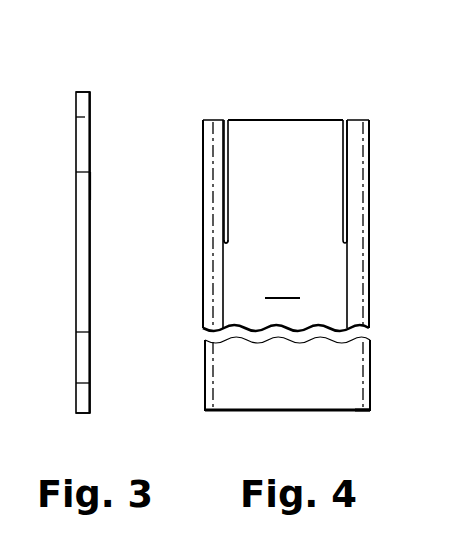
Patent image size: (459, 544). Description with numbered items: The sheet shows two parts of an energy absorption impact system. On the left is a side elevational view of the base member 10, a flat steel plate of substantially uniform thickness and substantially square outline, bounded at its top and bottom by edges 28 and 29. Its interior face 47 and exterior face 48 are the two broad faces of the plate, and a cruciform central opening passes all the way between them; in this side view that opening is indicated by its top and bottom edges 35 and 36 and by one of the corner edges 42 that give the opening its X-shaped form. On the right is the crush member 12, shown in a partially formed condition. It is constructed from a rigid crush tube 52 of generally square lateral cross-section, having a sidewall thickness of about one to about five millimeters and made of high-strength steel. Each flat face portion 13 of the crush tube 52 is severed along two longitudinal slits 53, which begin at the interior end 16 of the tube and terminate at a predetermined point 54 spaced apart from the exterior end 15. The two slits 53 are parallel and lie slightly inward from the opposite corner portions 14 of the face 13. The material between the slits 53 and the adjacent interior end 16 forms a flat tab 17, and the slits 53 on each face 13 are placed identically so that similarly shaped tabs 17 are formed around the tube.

In FIG. 3, the base member 10 is at (92, 92).
In FIG. 4, the crush member 12 is at (369, 120).
In FIG. 4, the flat face portion 13 is at (280, 286).
In FIG. 4, the corner portion 14 is at (369, 280).
In FIG. 4, the exterior end 15 is at (268, 412).
In FIG. 4, the interior end 16 is at (290, 120).
In FIG. 4, the tab 17 is at (257, 140).
In FIG. 3, the top edge 28 is at (81, 92).
In FIG. 3, the bottom edge 29 is at (82, 414).
In FIG. 3, the top edge of central opening 35 is at (90, 128).
In FIG. 3, the bottom edge of central opening 36 is at (77, 384).
In FIG. 3, the corner edge 42 is at (86, 326).
In FIG. 3, the interior face 47 is at (92, 187).
In FIG. 3, the exterior face 48 is at (76, 176).
In FIG. 4, the crush tube 52 is at (370, 412).
In FIG. 4, the slit 53 is at (231, 200).
In FIG. 4, the predetermined point 54 is at (229, 245).